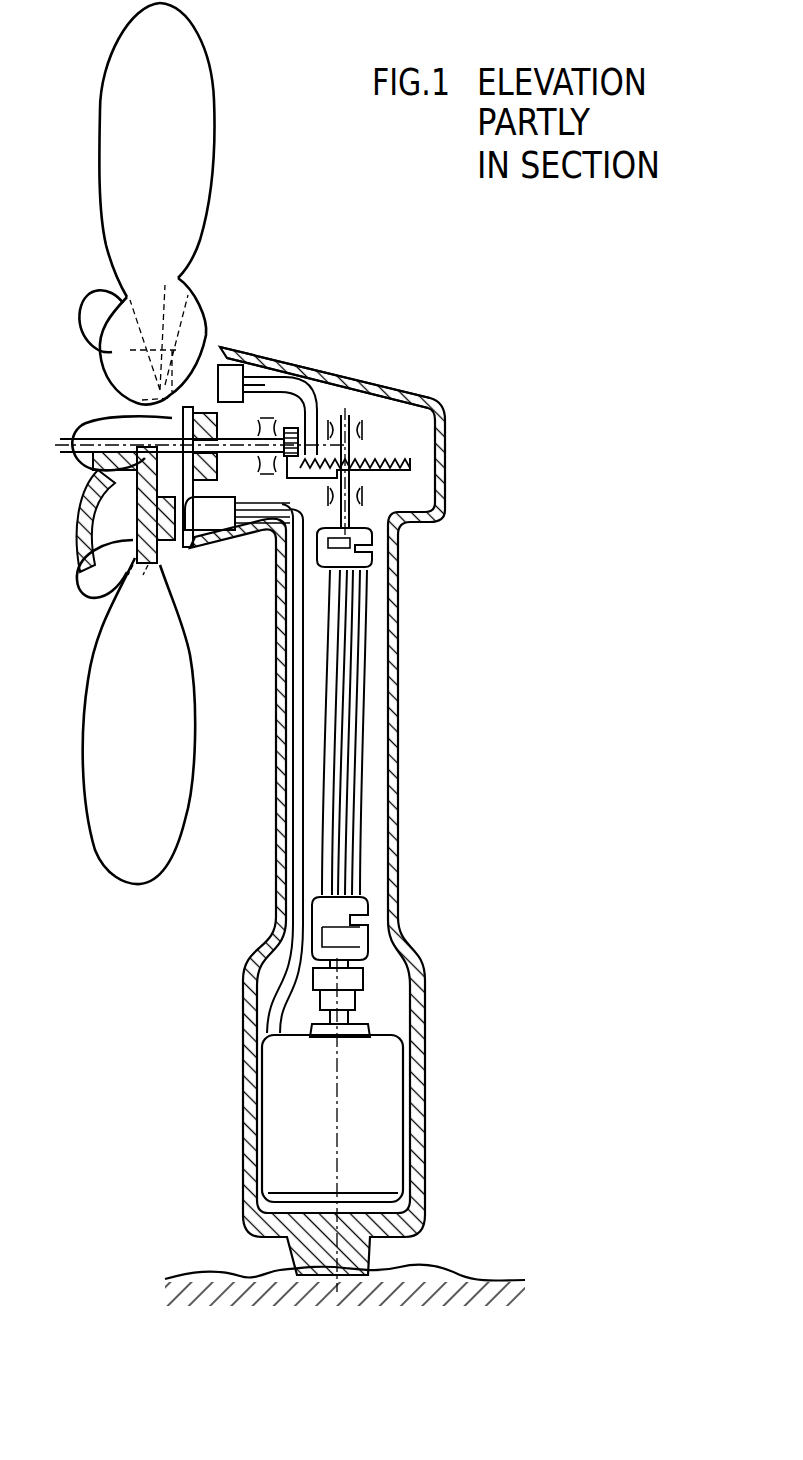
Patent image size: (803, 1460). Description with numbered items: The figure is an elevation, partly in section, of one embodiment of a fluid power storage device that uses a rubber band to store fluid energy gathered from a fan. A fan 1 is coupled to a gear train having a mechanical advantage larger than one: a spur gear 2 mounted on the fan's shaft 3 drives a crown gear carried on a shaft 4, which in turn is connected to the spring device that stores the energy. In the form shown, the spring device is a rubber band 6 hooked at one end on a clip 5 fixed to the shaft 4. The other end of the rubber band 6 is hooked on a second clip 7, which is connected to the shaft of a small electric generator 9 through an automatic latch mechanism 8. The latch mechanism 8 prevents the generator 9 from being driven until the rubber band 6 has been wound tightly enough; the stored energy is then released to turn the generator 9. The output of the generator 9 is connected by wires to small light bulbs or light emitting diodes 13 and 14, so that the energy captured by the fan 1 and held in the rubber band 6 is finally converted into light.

The fan 1 is at (220, 168).
The spur gear 2 is at (300, 422).
The fan's shaft 3 is at (232, 433).
The shaft 4 is at (360, 488).
The clip 5 is at (378, 567).
The rubber band 6 is at (368, 735).
The clip 7 is at (370, 903).
The automatic latch mechanism 8 is at (370, 985).
The electric generator 9 is at (383, 1069).
The light bulb or light emitting diode 13 is at (247, 368).
The light bulb or light emitting diode 14 is at (228, 553).